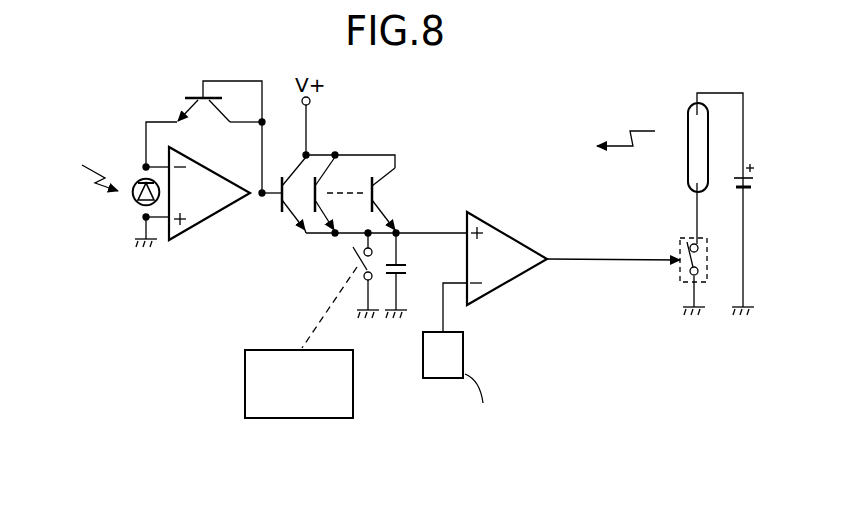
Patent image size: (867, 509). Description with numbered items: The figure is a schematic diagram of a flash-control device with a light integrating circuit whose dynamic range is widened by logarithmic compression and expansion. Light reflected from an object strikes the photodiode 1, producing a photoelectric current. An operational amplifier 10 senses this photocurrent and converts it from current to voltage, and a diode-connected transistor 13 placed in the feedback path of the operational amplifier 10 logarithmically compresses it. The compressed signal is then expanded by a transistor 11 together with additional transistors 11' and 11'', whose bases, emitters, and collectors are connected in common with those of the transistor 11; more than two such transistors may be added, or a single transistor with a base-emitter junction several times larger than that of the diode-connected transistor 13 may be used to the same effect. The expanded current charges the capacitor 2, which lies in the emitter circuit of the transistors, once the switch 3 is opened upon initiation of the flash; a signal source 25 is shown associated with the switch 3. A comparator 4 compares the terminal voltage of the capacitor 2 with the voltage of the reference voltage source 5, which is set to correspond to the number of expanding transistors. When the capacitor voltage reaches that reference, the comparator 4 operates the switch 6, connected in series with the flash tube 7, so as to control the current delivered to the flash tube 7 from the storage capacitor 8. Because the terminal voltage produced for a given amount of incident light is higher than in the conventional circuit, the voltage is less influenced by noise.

The photodiode 1 is at (135, 178).
The operational amplifier 10 is at (213, 168).
The diode-connected transistor 13 is at (195, 88).
The transistor 11 is at (274, 199).
The transistor 11' is at (347, 177).
The transistor 11'' is at (391, 182).
The switch 3 is at (352, 262).
The capacitor 2 is at (407, 270).
The signal source 25 is at (355, 388).
The comparator 4 is at (506, 231).
The reference voltage source 5 is at (465, 353).
The flash tube 7 is at (688, 166).
The storage capacitor 8 is at (752, 186).
The switch 6 is at (678, 268).